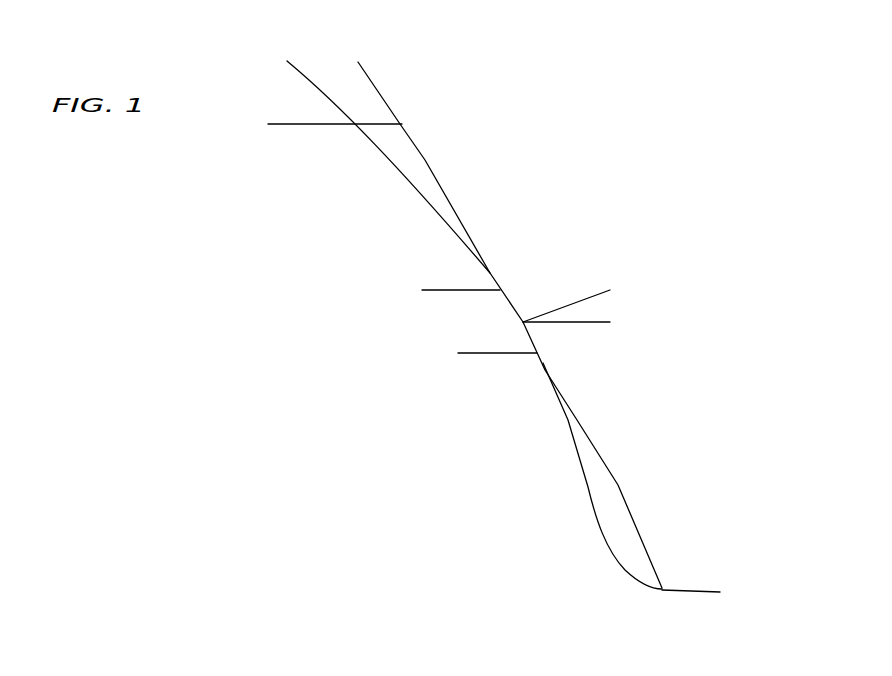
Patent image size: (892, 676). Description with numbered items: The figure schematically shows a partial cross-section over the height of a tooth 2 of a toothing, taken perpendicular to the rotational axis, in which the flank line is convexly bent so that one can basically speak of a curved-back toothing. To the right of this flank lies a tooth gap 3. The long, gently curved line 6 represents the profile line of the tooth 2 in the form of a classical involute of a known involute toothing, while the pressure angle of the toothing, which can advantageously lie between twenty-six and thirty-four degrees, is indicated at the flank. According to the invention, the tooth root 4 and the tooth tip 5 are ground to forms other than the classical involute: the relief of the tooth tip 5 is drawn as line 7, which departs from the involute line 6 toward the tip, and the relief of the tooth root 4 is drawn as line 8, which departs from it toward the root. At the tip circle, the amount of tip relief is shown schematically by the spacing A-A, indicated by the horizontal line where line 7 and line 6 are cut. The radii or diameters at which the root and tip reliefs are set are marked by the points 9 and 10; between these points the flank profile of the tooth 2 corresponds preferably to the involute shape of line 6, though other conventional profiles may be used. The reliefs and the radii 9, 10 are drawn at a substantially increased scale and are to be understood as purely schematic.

The tooth 2 is at (496, 310).
The tooth gap 3 is at (712, 576).
The tooth root 4 is at (479, 496).
The tooth tip 5 is at (324, 191).
The involute line 6 is at (454, 74).
The tooth tip relief line 7 is at (394, 179).
The tooth root relief line 8 is at (580, 498).
The root relief radius 9 is at (472, 369).
The tip relief radius 10 is at (432, 307).
The spacing A- A is at (414, 119).